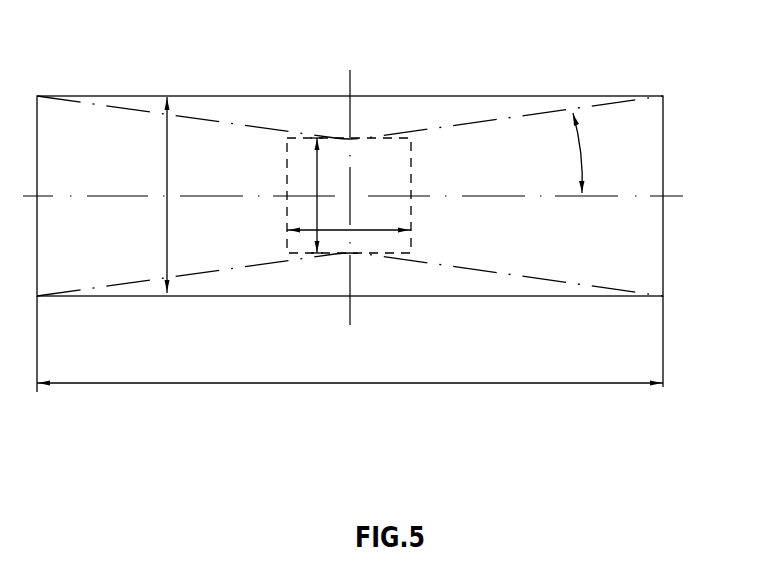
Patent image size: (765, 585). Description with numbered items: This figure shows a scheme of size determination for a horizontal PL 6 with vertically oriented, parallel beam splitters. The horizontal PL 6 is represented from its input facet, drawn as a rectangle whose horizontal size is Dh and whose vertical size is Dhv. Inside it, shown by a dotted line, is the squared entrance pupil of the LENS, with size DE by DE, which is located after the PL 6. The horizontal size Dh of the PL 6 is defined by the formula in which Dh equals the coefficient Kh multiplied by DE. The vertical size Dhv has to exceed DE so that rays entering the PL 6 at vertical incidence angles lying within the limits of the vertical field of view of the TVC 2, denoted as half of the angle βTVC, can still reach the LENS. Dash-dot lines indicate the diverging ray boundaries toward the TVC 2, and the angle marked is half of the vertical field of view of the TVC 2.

The horizontal PL 6 is at (367, 96).
The TVC 2 is at (413, 160).
The entrance pupil size DE is at (417, 312).
The vertical size Dhv is at (167, 240).
The horizontal size Dh is at (335, 383).
The element TVC is at (574, 130).